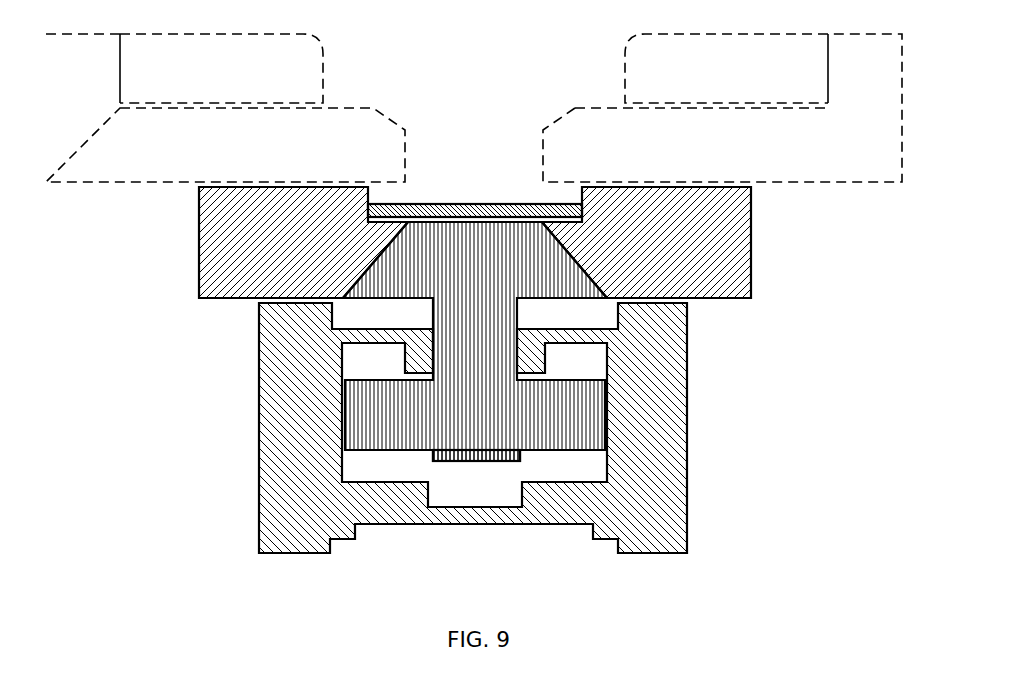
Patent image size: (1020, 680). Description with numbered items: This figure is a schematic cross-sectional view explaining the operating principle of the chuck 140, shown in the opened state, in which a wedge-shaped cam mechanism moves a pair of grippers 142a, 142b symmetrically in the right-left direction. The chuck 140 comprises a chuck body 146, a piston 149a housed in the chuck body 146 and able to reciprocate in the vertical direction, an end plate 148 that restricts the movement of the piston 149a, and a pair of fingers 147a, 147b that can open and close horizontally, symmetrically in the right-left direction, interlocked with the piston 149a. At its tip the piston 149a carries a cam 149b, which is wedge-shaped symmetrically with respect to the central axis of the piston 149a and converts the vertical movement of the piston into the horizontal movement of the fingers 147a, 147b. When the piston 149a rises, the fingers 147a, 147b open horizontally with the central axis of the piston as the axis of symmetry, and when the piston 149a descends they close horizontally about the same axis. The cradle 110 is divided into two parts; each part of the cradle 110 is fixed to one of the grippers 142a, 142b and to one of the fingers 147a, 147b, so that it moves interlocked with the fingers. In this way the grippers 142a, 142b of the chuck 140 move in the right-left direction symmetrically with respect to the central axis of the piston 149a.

The cradle 110 is at (103, 183).
The gripper 142a is at (323, 80).
The gripper 142b is at (625, 72).
The chuck 140 is at (778, 385).
The chuck body 146 is at (687, 482).
The finger 147a is at (199, 272).
The finger 147b is at (751, 272).
The end plate 148 is at (465, 203).
The piston 149a is at (497, 461).
The cam 149b is at (487, 226).